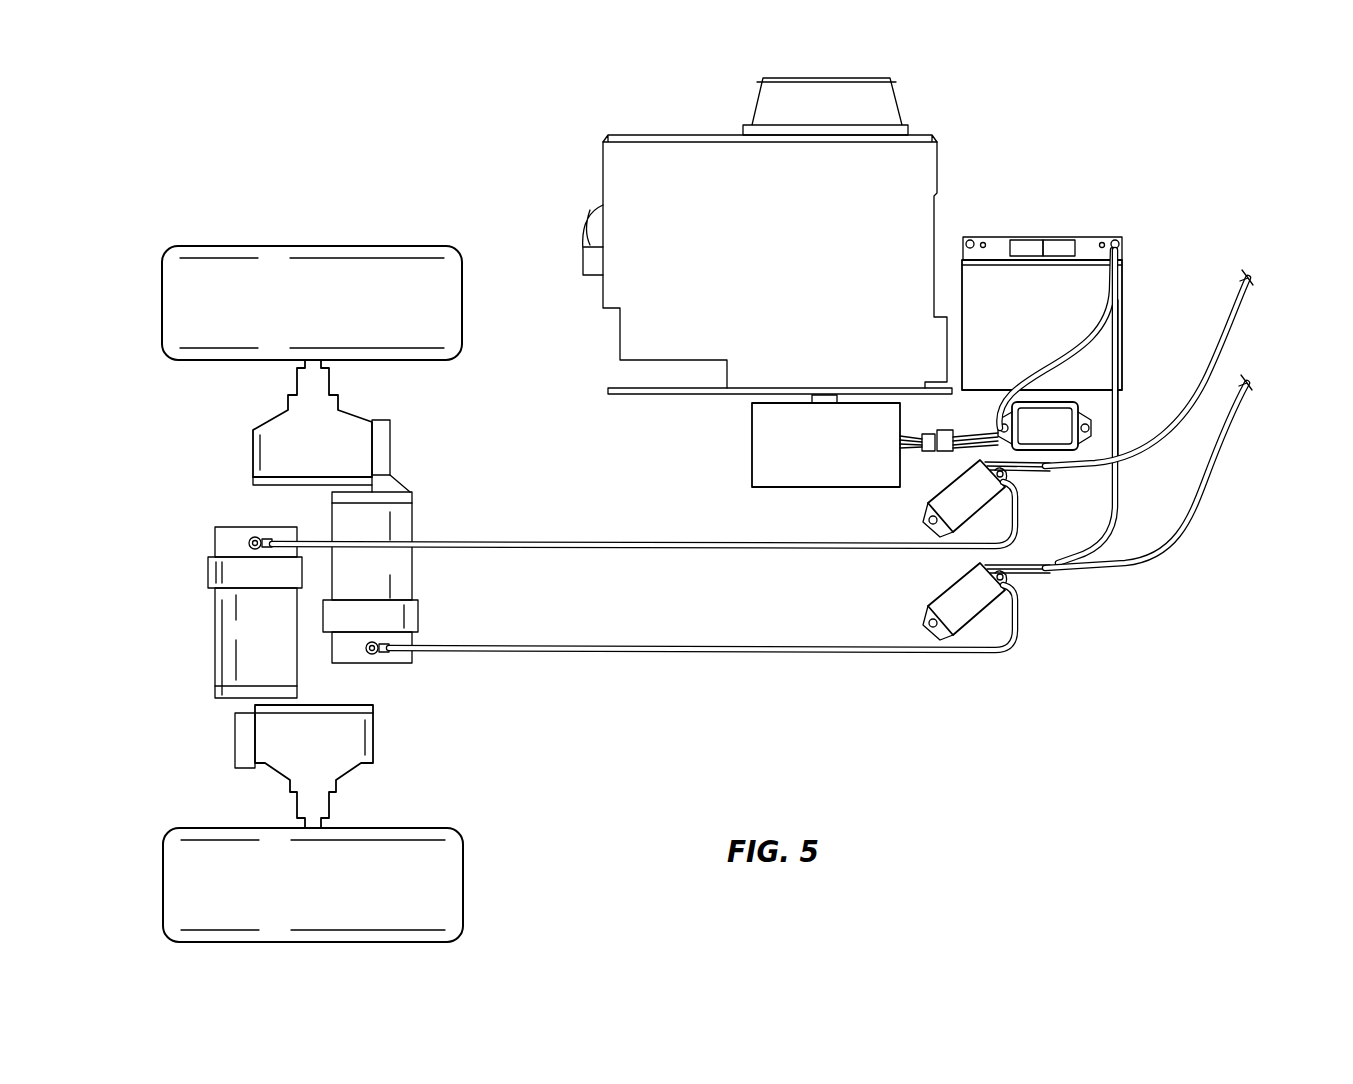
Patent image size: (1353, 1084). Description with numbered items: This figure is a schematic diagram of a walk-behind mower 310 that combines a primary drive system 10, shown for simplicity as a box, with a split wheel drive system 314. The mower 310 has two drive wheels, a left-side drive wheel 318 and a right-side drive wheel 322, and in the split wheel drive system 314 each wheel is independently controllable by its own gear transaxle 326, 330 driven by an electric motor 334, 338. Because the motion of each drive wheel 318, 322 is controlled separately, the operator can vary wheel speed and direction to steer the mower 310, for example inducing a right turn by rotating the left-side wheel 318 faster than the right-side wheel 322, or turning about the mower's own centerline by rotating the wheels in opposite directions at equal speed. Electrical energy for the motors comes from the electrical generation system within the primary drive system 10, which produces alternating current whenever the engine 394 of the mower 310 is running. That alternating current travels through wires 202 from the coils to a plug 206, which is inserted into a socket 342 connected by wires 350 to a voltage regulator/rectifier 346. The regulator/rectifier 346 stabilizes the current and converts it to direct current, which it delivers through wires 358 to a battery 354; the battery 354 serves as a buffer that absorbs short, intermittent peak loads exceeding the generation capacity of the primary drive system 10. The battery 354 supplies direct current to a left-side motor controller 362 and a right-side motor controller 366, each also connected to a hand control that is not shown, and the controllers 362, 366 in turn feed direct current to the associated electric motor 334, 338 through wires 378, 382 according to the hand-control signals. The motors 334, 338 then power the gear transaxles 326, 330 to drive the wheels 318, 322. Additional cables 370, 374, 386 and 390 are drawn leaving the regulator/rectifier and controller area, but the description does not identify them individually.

The primary drive system 10 is at (765, 445).
The wires 202 is at (903, 445).
The plug 206 is at (923, 430).
The mower 310 is at (1036, 777).
The split wheel drive system 314 is at (1070, 627).
The left-side drive wheel 318 is at (462, 870).
The right-side drive wheel 322 is at (320, 270).
The gear transaxle 326 is at (340, 770).
The gear transaxle 330 is at (278, 425).
The electric motor 334 is at (242, 655).
The electric motor 338 is at (395, 560).
The socket 342 is at (942, 428).
The voltage regulator/rectifier 346 is at (1062, 413).
The wires 350 is at (993, 440).
The battery 354 is at (1062, 300).
The wires 358 is at (1065, 357).
The left-side motor controller 362 is at (978, 492).
The right-side motor controller 366 is at (967, 612).
The cable 370 is at (1113, 415).
The cable 374 is at (1117, 485).
The wires 378 is at (770, 555).
The wires 382 is at (848, 660).
The cable to remote component 386 is at (1233, 310).
The cable to remote component 390 is at (1147, 552).
The engine 394 is at (640, 178).